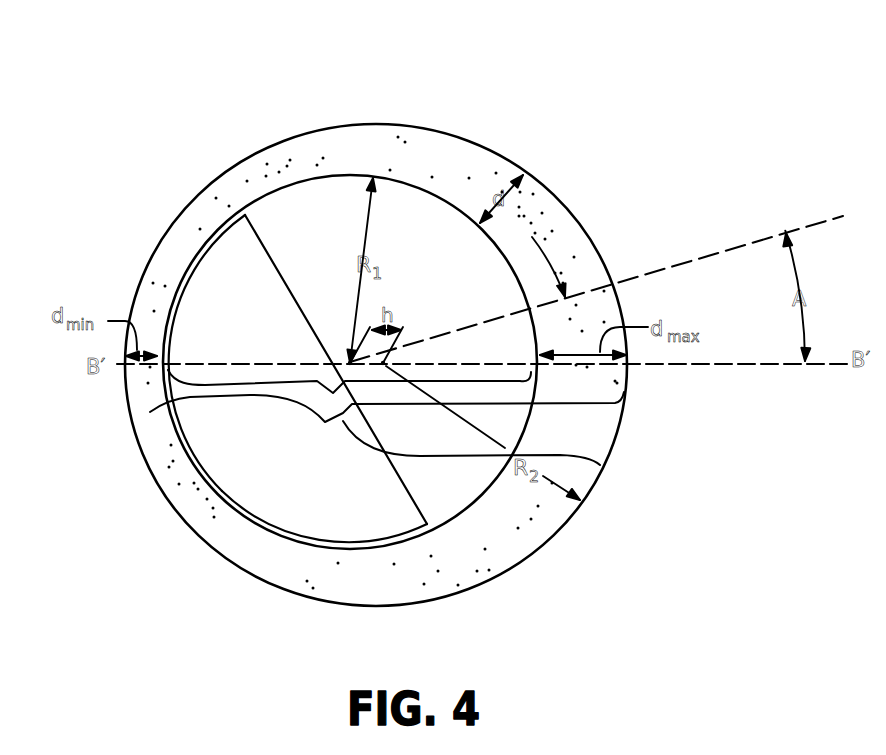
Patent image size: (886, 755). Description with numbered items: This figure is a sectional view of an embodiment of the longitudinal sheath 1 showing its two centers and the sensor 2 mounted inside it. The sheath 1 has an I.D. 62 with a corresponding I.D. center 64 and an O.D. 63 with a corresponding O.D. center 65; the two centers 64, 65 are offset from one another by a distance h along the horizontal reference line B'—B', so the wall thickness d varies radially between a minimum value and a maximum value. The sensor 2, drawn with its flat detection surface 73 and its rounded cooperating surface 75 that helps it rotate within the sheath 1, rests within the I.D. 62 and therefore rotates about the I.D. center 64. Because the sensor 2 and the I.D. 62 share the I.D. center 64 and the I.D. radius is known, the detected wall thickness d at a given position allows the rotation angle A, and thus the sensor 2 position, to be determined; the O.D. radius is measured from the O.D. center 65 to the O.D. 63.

The longitudinal sheath 1 is at (292, 176).
The sensor 2 is at (188, 326).
The I.D. 62 is at (150, 412).
The O.D. 63 is at (600, 465).
The I.D. center 64 is at (385, 366).
The O.D. center 65 is at (392, 371).
The flat detection surface 73 is at (295, 296).
The rounded cooperating surface 75 is at (213, 497).